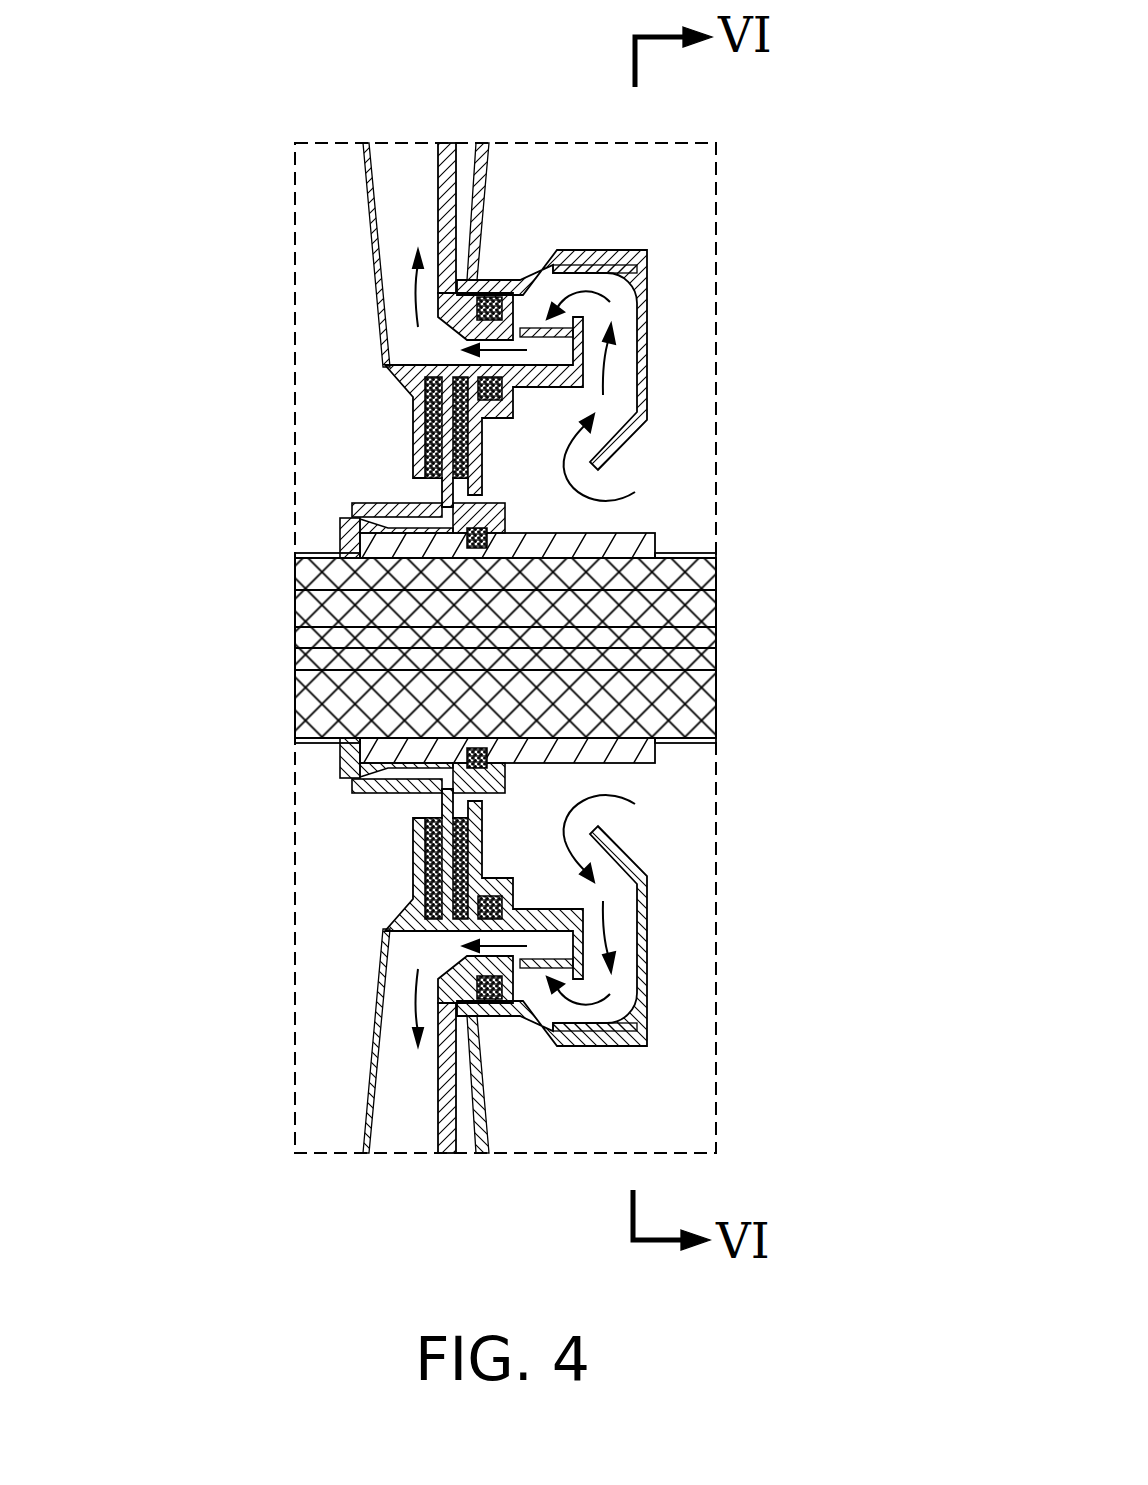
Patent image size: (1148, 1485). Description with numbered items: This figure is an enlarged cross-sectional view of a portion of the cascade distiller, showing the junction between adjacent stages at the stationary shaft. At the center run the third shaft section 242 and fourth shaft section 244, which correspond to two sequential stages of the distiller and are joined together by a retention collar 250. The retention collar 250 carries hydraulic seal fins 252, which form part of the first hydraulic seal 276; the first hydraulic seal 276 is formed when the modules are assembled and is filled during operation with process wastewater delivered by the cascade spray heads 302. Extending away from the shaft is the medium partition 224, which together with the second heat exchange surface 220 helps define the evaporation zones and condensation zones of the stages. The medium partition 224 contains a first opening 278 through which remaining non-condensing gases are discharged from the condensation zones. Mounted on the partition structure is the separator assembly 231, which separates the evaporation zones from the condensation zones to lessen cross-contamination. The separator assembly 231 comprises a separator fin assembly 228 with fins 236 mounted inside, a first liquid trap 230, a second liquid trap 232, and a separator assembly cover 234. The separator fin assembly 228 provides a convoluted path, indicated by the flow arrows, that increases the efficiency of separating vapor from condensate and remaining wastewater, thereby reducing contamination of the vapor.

The second heat exchange surface 220 is at (363, 1078).
The medium partition 224 is at (445, 143).
The separator fin assembly 228 is at (553, 913).
The first liquid trap 230 is at (573, 1042).
The separator assembly 231 is at (668, 949).
The second liquid trap 232 is at (535, 968).
The separator assembly cover 234 is at (647, 1005).
The fins 236 is at (647, 335).
The third shaft section 242 is at (300, 612).
The fourth shaft section 244 is at (705, 577).
The retention collar 250 is at (357, 795).
The hydraulic seal fin 252 is at (440, 498).
The first hydraulic seal 276 is at (413, 408).
The first opening 278 is at (440, 273).
The cascade spray head 302 is at (505, 214).